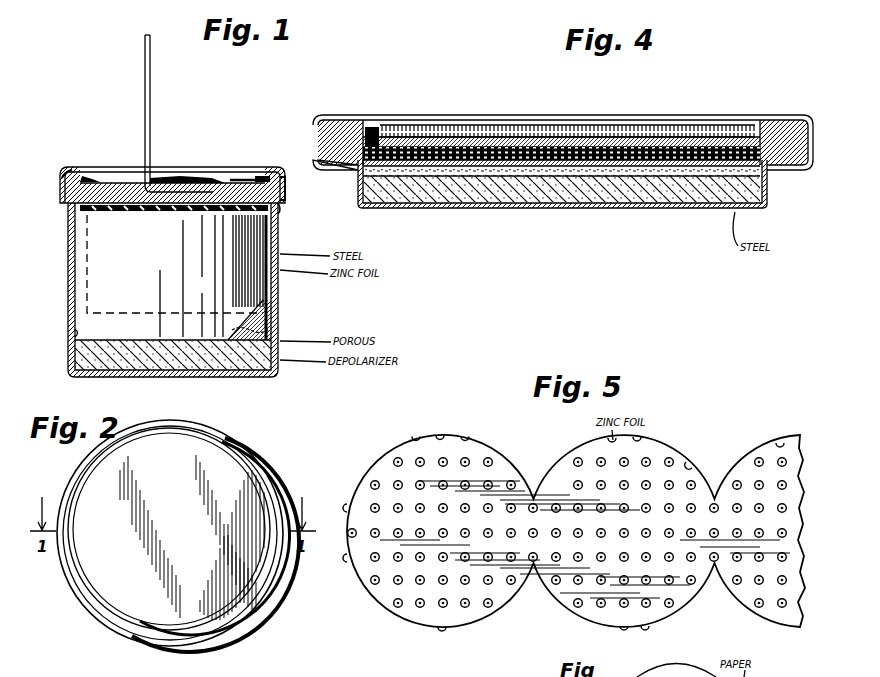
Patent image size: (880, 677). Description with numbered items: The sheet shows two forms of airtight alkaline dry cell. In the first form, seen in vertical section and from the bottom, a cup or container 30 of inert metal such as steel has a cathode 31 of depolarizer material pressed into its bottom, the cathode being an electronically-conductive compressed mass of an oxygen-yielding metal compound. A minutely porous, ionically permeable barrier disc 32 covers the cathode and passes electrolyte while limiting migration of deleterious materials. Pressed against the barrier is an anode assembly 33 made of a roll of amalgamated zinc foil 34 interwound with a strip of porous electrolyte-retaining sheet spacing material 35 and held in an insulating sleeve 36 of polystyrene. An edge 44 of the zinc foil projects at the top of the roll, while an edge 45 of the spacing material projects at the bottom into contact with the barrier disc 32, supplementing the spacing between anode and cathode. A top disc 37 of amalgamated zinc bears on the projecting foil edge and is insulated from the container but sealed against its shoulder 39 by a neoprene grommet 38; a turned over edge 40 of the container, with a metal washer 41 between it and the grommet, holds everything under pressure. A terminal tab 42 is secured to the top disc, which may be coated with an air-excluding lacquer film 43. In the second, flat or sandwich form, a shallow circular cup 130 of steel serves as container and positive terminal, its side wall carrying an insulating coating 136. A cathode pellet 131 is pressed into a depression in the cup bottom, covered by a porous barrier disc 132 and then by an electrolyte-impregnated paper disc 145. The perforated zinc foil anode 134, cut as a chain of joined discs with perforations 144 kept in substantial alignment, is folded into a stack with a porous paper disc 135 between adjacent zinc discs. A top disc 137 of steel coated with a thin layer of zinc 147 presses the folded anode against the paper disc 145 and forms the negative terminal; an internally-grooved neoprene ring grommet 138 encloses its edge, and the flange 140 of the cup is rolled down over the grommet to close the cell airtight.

In FIG. 1, the cup or container 30 is at (68, 226).
In FIG. 2, the cup or container 30 is at (197, 449).
In FIG. 1, the cathode 31 is at (75, 356).
In FIG. 1, the barrier disc 32 is at (74, 332).
In FIG. 1, the anode assembly 33 is at (82, 290).
In FIG. 1, the amalgamated zinc foil 34 is at (86, 263).
In FIG. 1, the porous electrolyte-retaining sheet spacing material 35 is at (265, 302).
In FIG. 1, the insulating sleeve 36 is at (268, 313).
In FIG. 1, the top disc 37 is at (284, 183).
In FIG. 1, the grommet 38 is at (62, 193).
In FIG. 1, the shoulder 39 is at (281, 207).
In FIG. 2, the shoulder 39 is at (258, 460).
In FIG. 1, the turned over edge 40 is at (75, 170).
In FIG. 1, the metal washer 41 is at (262, 178).
In FIG. 1, the terminal tab 42 is at (152, 72).
In FIG. 1, the air-excluding lacquer film 43 is at (212, 186).
In FIG. 1, the edge of the zinc foil 44 is at (235, 210).
In FIG. 1, the edge of the spacing material 45 is at (262, 326).
In FIG. 4, the shallow circular cup 130 is at (768, 188).
In FIG. 4, the cathode pellet 131 is at (455, 186).
In FIG. 4, the porous barrier disc 132 is at (710, 176).
In FIG. 4, the perforated zinc foil anode 134 is at (490, 150).
In FIG. 5, the perforated zinc foil anode 134 is at (510, 454).
In FIG. 4, the porous paper disc 135 is at (536, 160).
In FIG. 4, the insulating coating 136 is at (767, 205).
In FIG. 4, the top disc 137 is at (566, 140).
In FIG. 4, the neoprene ring grommet 138 is at (735, 132).
In FIG. 4, the flange 140 is at (790, 120).
In FIG. 4, the perforations 144 is at (690, 148).
In FIG. 5, the perforations 144 is at (668, 583).
In FIG. 4, the paper disc 145 is at (622, 178).
In FIG. 4, the thin layer of zinc 147 is at (627, 148).